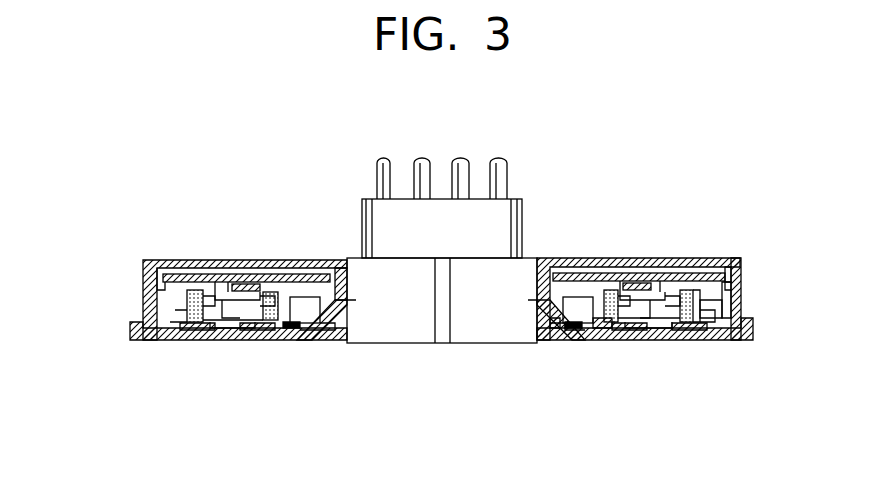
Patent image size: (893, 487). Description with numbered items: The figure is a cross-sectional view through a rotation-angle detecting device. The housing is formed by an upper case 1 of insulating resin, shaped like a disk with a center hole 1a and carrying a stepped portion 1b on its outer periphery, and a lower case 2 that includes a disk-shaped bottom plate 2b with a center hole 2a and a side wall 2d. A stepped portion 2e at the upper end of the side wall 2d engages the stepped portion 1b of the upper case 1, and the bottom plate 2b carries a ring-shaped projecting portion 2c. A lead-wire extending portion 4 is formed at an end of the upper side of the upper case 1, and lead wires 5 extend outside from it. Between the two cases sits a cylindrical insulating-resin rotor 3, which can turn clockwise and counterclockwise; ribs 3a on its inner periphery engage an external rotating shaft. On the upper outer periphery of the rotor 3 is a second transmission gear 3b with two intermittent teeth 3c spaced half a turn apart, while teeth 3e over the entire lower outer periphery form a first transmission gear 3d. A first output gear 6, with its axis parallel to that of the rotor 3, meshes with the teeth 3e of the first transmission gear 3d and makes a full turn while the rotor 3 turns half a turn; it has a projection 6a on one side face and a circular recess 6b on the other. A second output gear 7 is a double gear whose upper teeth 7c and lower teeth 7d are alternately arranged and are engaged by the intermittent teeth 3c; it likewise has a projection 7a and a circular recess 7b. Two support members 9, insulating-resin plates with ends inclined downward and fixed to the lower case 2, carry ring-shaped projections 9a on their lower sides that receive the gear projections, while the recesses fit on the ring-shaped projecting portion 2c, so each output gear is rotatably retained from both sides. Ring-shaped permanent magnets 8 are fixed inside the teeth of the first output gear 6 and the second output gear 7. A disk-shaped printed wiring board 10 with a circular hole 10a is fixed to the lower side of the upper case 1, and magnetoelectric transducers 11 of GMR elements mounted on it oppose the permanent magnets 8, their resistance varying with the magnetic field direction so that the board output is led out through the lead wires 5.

The upper case 1 is at (143, 260).
The center hole 1a is at (543, 258).
The stepped portion 1b is at (734, 258).
The lower case 2 is at (128, 336).
The center hole 2a is at (545, 343).
The bottom plate 2b is at (605, 343).
The ring-shaped projecting portion 2c is at (225, 342).
The side wall 2d is at (741, 297).
The stepped portion 2e is at (742, 272).
The rotor 3 is at (350, 298).
The ribs 3a is at (455, 343).
The second transmission gear 3b is at (355, 342).
The intermittent teeth 3c is at (310, 262).
The first transmission gear 3d is at (320, 342).
The teeth 3e is at (305, 342).
The lead-wire extending portion 4 is at (522, 206).
The lead wires 5 is at (508, 162).
The first output gear 6 is at (190, 342).
The projection 6a is at (290, 345).
The circular recess 6b is at (245, 342).
The second output gear 7 is at (697, 340).
The projection 7a is at (616, 343).
The circular recess 7b is at (655, 343).
The upper teeth 7c is at (741, 306).
The lower teeth 7d is at (718, 342).
The permanent magnets 8 is at (180, 260).
The support members 9 is at (233, 262).
The ring-shaped projections 9a is at (213, 262).
The printed wiring board 10 is at (325, 262).
The circular hole 10a is at (535, 300).
The magnetoelectric transducers 11 is at (243, 262).